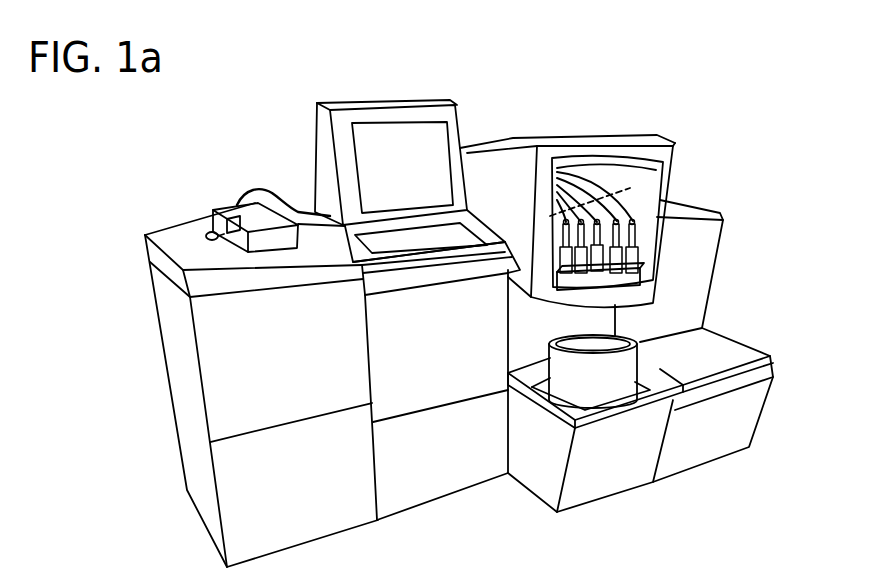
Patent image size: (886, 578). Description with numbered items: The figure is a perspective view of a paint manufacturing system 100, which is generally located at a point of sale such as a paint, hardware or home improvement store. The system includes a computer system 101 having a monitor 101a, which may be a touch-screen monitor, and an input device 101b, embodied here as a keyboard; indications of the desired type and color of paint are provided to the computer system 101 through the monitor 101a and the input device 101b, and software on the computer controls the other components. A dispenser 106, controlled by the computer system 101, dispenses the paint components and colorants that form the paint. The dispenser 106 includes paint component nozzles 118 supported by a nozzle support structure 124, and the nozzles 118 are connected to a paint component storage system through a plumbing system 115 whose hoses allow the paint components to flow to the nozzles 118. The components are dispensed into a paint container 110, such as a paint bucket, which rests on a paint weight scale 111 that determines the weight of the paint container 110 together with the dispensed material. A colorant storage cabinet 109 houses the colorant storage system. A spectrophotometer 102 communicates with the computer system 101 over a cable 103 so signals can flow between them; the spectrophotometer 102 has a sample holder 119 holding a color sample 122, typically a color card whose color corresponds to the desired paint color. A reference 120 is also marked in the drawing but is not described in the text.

The paint manufacturing system 100 is at (165, 162).
The computer system 101 is at (482, 122).
The monitor 101a is at (395, 157).
The input device 101b is at (437, 233).
The spectrophotometer 102 is at (228, 211).
The cable 103 is at (282, 196).
The dispenser 106 is at (745, 218).
The colorant storage cabinet 109 is at (145, 340).
The paint container 110 is at (625, 363).
The paint weight scale 111 is at (535, 387).
The plumbing system 115 is at (633, 182).
The paint component nozzles 118 is at (642, 200).
The sample holder 119 is at (200, 213).
The base 120 is at (720, 573).
The color sample 122 is at (207, 231).
The nozzle support structure 124 is at (613, 285).